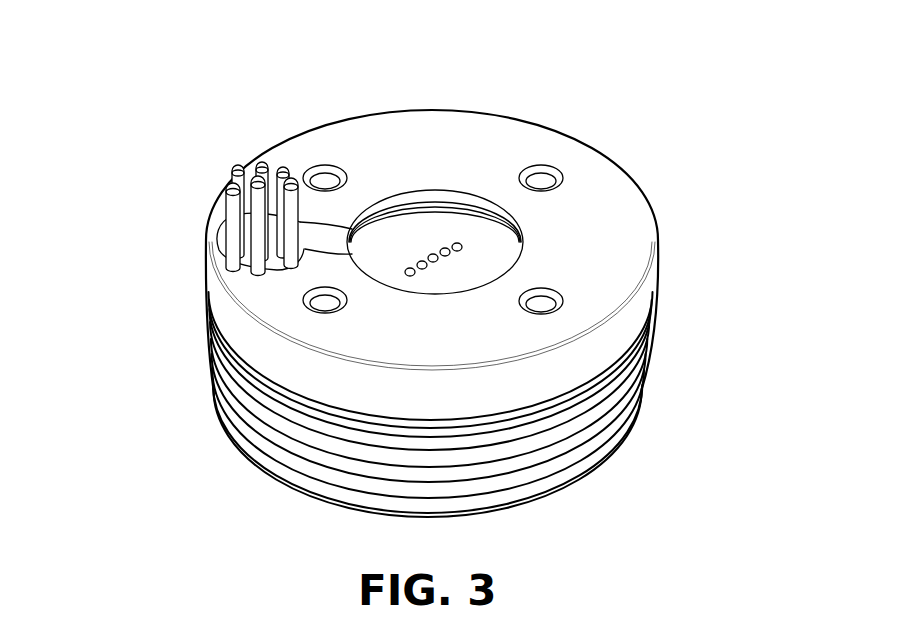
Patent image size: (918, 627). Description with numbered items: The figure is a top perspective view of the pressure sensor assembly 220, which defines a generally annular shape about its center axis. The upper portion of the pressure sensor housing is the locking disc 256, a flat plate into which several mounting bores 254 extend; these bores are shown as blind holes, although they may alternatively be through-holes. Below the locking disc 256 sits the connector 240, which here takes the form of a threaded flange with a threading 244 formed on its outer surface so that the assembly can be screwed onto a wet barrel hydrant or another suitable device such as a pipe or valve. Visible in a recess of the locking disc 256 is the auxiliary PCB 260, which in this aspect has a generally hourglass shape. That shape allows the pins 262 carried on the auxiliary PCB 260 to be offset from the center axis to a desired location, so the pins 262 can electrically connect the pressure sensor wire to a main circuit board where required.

The pressure sensor assembly 220 is at (437, 269).
The connector 240 is at (485, 378).
The threading 244 is at (600, 425).
The mounting bores 254 is at (317, 172).
The locking disc 256 is at (460, 133).
The auxiliary PCB 260 is at (405, 225).
The pins 262 is at (283, 166).